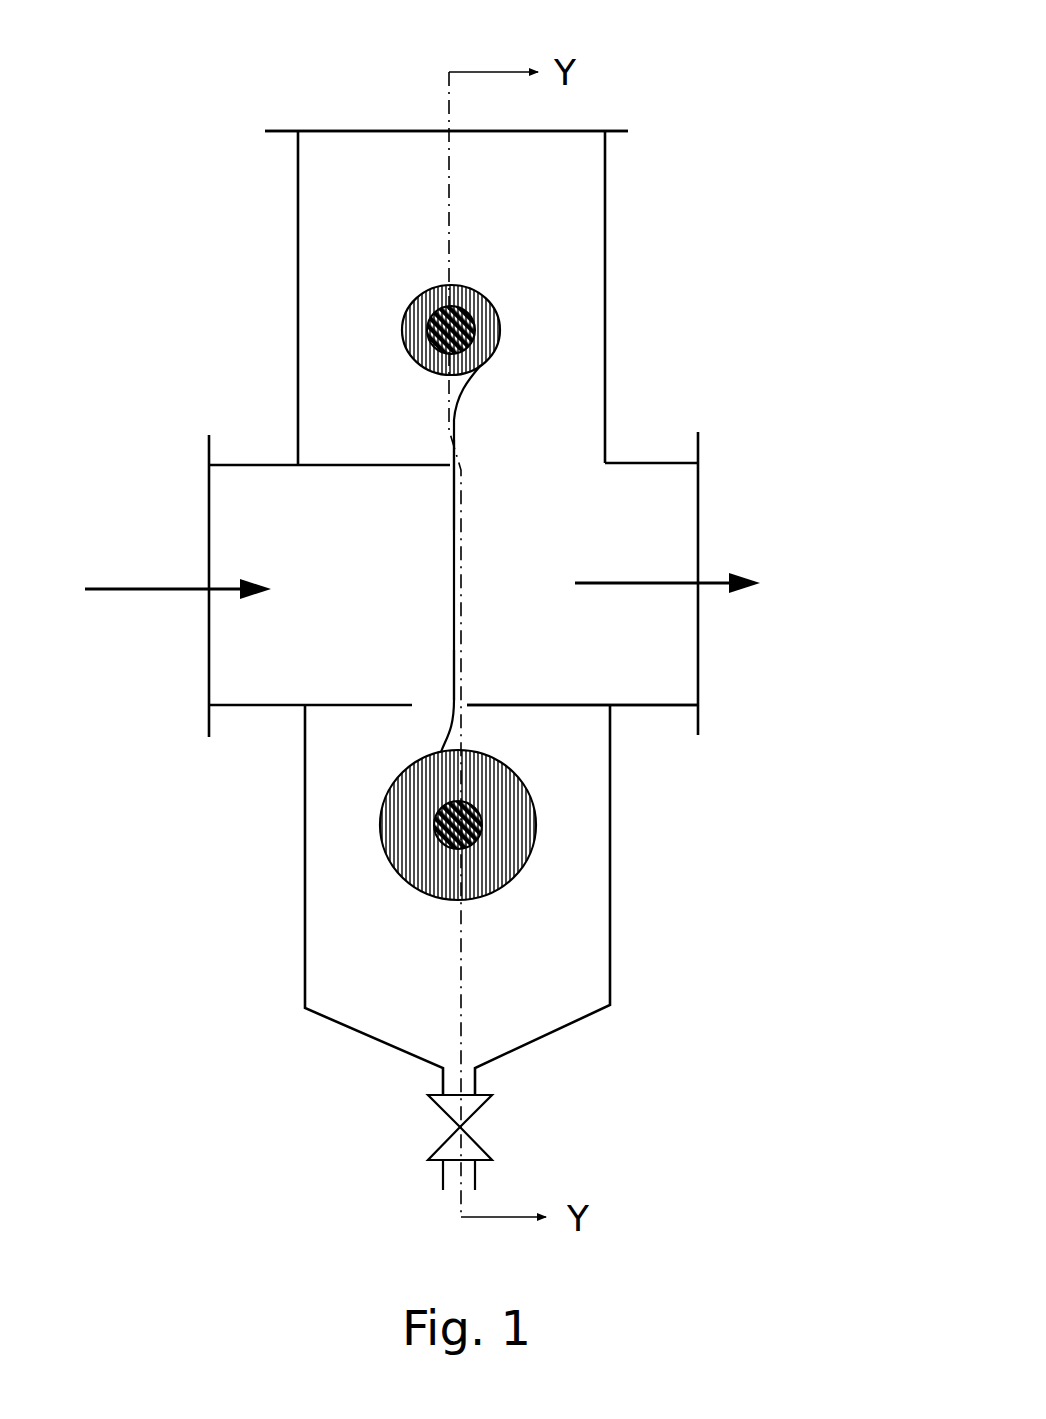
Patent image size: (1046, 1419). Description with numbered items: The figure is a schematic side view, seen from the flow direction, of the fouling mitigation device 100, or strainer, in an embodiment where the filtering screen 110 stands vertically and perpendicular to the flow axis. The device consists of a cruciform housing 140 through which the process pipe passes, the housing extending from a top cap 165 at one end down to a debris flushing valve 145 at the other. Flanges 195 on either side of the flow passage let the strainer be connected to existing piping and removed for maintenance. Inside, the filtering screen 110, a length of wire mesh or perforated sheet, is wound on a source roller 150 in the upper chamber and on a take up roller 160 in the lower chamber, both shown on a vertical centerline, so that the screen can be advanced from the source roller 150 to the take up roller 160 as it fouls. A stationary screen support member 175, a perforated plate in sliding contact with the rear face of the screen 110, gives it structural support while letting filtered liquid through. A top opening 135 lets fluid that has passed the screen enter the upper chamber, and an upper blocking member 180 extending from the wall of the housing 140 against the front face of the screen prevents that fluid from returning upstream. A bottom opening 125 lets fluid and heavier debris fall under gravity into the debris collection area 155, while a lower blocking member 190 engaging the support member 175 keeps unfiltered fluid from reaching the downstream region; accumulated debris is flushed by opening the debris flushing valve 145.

The fouling mitigation device 100 is at (676, 175).
The filtering screen 110 is at (365, 465).
The bottom opening 125 is at (437, 705).
The top opening 135 is at (530, 462).
The cruciform housing 140 is at (605, 253).
The debris flushing valve 145 is at (413, 1116).
The source roller 150 is at (478, 327).
The debris collection area 155 is at (428, 1005).
The take up roller 160 is at (482, 840).
The top cap 165 is at (388, 130).
The stationary screen support member 175 is at (462, 537).
The upper blocking member 180 is at (450, 518).
The lower blocking member 190 is at (547, 706).
The flanges 195 is at (205, 453).